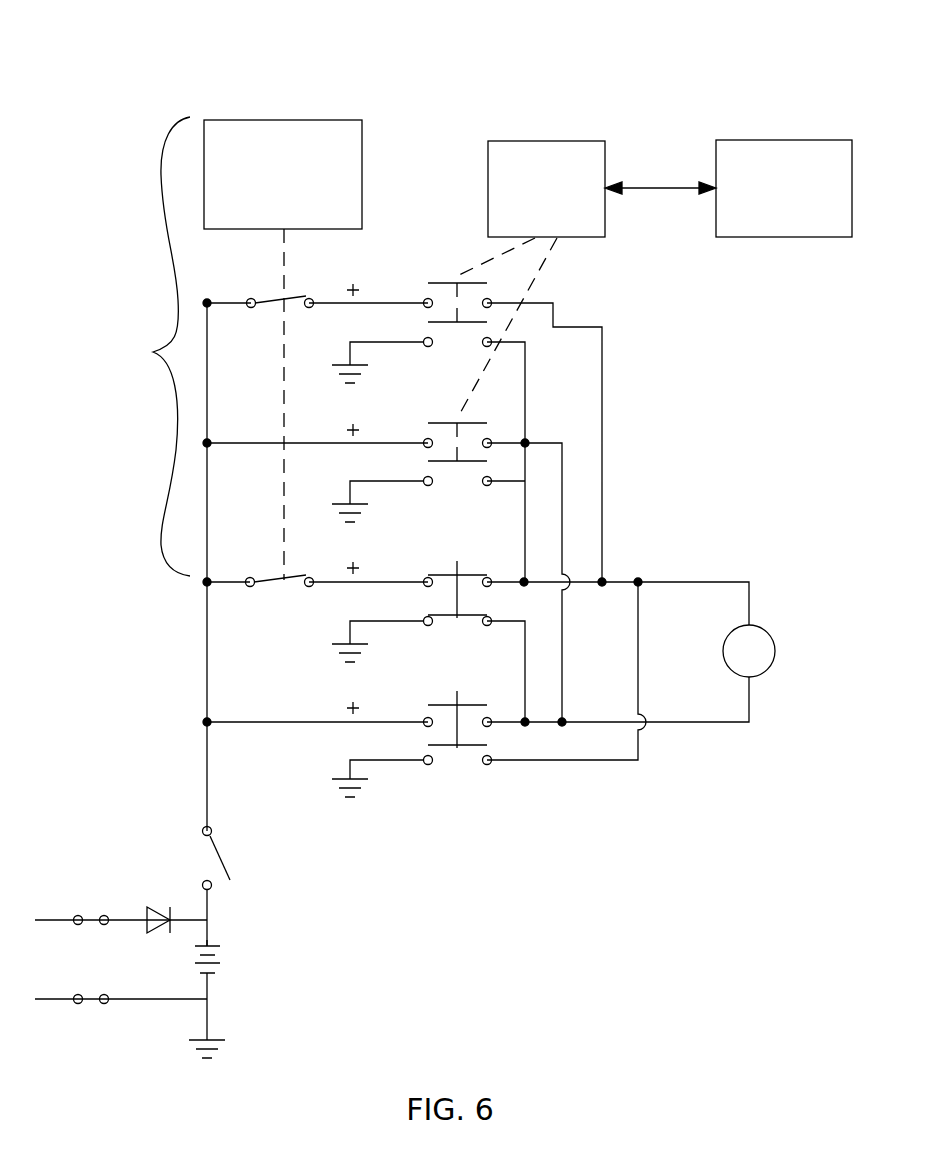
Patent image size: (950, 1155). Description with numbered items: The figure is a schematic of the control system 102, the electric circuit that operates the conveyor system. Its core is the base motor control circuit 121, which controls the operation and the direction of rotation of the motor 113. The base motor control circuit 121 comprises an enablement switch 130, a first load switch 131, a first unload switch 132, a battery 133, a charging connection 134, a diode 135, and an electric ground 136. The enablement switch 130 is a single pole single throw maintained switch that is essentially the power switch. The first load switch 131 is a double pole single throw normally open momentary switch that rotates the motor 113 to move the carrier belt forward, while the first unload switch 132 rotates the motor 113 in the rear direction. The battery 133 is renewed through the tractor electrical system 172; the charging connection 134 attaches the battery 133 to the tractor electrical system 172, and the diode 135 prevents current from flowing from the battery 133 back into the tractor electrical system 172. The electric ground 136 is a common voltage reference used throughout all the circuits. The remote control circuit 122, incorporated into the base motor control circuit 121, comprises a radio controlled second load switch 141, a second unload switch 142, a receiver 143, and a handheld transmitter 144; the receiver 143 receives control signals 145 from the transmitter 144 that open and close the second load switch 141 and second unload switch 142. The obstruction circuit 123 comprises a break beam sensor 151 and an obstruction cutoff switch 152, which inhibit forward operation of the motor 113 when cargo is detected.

The control system 102 is at (135, 128).
The motor 113 is at (776, 651).
The base motor control circuit 121 is at (652, 500).
The remote control circuit 122 is at (633, 258).
The obstruction circuit 123 is at (145, 346).
The enablement switch 130 is at (222, 860).
The first load switch 131 is at (455, 625).
The first unload switch 132 is at (455, 765).
The battery 133 is at (222, 963).
The charging connection 134 is at (92, 917).
The diode 135 is at (158, 905).
The electric ground 136 is at (333, 374).
The second load switch 141 is at (443, 275).
The second unload switch 142 is at (455, 483).
The receiver 143 is at (540, 141).
The transmitter 144 is at (783, 140).
The control signals 145 is at (658, 186).
The break beam sensor 151 is at (362, 133).
The obstruction cutoff switch 152 is at (305, 296).
The tractor electrical system 172 is at (45, 1002).